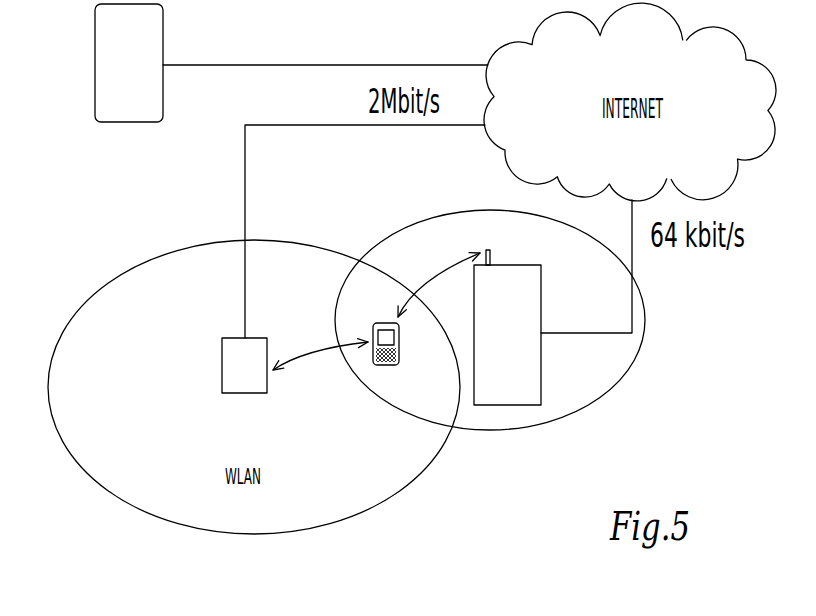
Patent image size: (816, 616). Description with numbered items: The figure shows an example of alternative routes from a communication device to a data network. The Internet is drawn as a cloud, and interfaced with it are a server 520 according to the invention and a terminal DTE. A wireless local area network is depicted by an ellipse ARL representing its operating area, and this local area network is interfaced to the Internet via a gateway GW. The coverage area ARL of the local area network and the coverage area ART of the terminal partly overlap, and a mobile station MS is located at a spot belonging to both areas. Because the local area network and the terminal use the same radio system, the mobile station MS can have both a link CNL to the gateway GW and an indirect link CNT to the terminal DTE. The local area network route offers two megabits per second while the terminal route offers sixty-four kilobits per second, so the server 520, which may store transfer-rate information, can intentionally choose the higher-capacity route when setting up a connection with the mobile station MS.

The server 520 is at (95, 61).
The link to the terminal CNT is at (427, 282).
The link to the LAN gateway CNL is at (314, 352).
The terminal DTE is at (541, 310).
The mobile station MS is at (388, 365).
The gateway GW is at (243, 393).
The coverage area of the terminal ART is at (607, 392).
The coverage area of the WLAN ARL is at (415, 480).